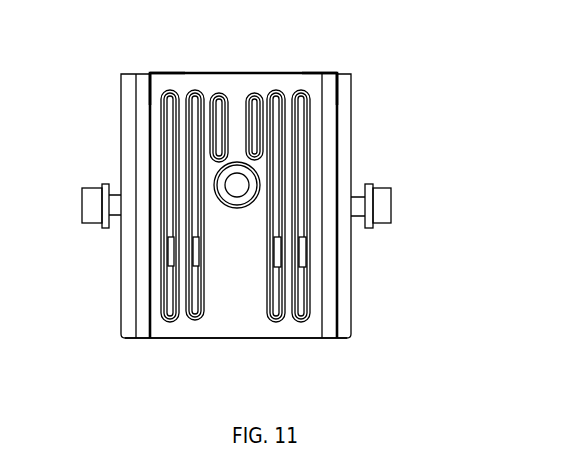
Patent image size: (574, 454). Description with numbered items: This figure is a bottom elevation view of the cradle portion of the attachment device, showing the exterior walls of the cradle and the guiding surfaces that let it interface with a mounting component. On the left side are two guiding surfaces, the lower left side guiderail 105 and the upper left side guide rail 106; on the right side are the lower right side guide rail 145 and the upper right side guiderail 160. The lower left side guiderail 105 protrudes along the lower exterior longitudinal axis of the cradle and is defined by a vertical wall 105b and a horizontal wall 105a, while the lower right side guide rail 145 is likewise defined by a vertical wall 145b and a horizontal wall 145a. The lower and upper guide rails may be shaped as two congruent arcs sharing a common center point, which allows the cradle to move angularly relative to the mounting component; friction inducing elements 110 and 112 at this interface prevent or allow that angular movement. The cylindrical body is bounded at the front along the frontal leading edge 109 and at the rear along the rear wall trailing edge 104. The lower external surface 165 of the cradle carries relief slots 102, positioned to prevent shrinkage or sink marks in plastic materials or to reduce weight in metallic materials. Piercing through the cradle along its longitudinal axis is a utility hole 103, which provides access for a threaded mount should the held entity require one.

The relief slots 102 is at (170, 323).
The utility hole 103 is at (236, 175).
The rear wall trailing edge 104 is at (307, 340).
The lower left side guiderail 105 is at (139, 90).
The horizontal wall 105a is at (132, 101).
The vertical wall 105b is at (150, 82).
The upper left side guide rail 106 is at (128, 118).
The frontal leading edge 109 is at (263, 71).
The friction inducing element 110 is at (415, 168).
The friction inducing element 112 is at (82, 190).
The lower right side guide rail 145 is at (331, 92).
The horizontal wall 145a is at (400, 86).
The vertical wall 145b is at (386, 41).
The upper right side guiderail 160 is at (390, 108).
The lower external surface 165 is at (226, 260).